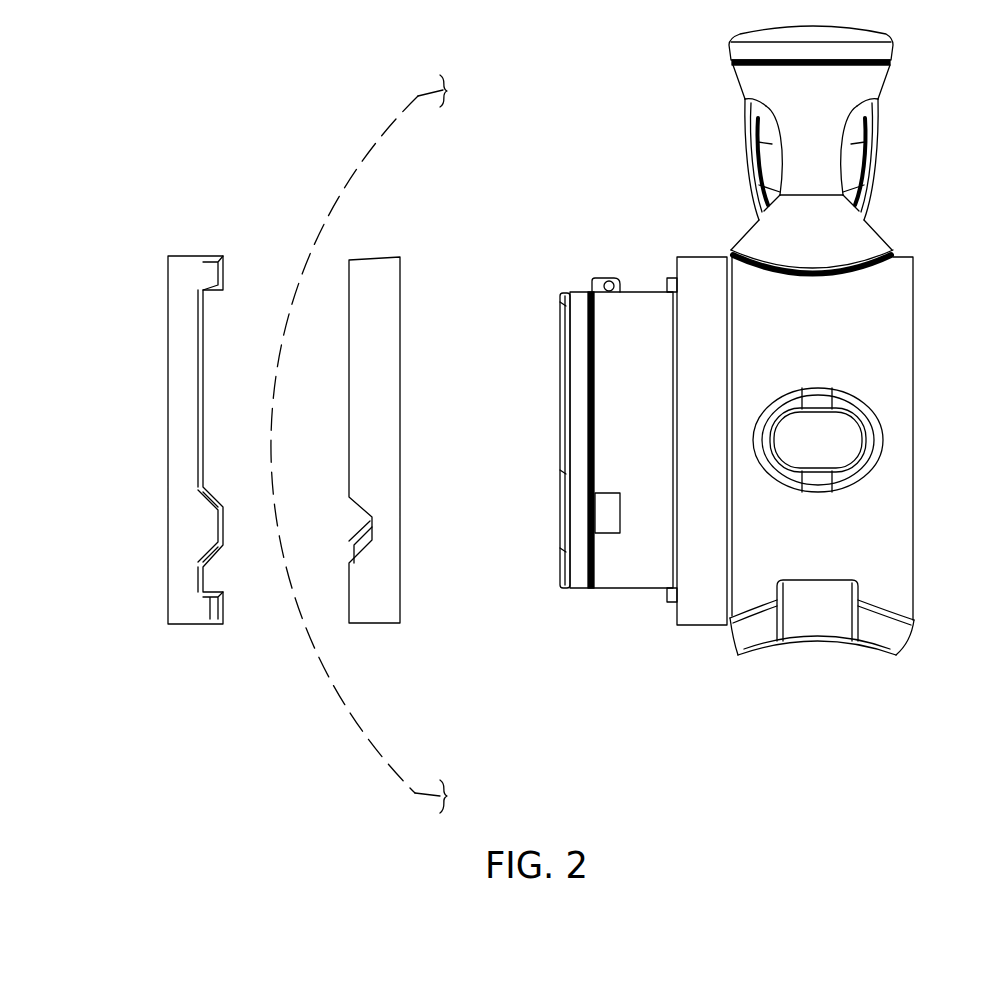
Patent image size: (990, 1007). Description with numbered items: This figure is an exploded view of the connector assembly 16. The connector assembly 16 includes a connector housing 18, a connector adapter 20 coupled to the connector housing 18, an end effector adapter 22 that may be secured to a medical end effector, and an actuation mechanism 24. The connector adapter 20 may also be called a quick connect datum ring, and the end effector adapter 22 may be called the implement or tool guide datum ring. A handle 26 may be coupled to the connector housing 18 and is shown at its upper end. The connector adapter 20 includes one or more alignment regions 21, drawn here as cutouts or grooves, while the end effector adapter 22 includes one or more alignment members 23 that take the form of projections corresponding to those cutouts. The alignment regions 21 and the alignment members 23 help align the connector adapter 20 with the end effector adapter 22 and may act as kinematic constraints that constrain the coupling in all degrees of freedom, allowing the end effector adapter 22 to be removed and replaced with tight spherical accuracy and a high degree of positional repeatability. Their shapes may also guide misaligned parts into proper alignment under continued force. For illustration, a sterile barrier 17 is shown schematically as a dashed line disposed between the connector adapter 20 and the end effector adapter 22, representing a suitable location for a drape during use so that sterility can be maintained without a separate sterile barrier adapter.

The connector assembly 16 is at (369, 93).
The sterile barrier 17 is at (320, 193).
The connector housing 18 is at (700, 347).
The connector adapter 20 is at (374, 481).
The alignment region 21 is at (370, 523).
The end effector adapter 22 is at (178, 480).
The alignment member 23 is at (217, 532).
The actuation mechanism 24 is at (822, 660).
The handle 26 is at (868, 80).